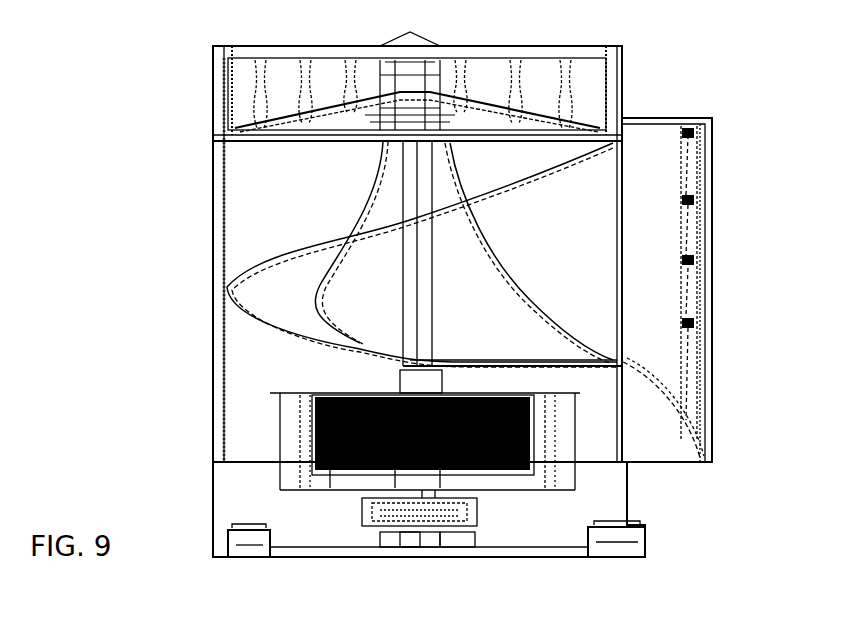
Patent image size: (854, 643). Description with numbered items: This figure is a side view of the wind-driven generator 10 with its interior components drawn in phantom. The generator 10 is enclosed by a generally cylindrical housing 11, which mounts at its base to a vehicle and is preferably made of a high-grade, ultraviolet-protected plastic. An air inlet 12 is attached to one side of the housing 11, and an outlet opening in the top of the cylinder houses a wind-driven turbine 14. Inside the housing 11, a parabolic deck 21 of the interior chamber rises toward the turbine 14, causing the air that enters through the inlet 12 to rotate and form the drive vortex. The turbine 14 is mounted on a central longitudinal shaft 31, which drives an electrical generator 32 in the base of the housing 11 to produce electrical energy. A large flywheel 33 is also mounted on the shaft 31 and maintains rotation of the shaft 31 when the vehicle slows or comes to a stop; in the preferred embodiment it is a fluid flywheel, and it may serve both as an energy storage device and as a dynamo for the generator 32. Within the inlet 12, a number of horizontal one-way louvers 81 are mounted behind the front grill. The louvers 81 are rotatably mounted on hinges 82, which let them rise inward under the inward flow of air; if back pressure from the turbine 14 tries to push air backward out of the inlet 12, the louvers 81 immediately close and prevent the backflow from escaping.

The generator 10 is at (163, 72).
The housing 11 is at (213, 218).
The air inlet 12 is at (680, 462).
The wind-driven turbine 14 is at (606, 88).
The parabolic deck 21 is at (303, 240).
The central longitudinal shaft 31 is at (403, 302).
The electrical generator 32 is at (474, 522).
The flywheel 33 is at (318, 395).
The one-way louvers 81 is at (690, 238).
The hinges 82 is at (705, 212).